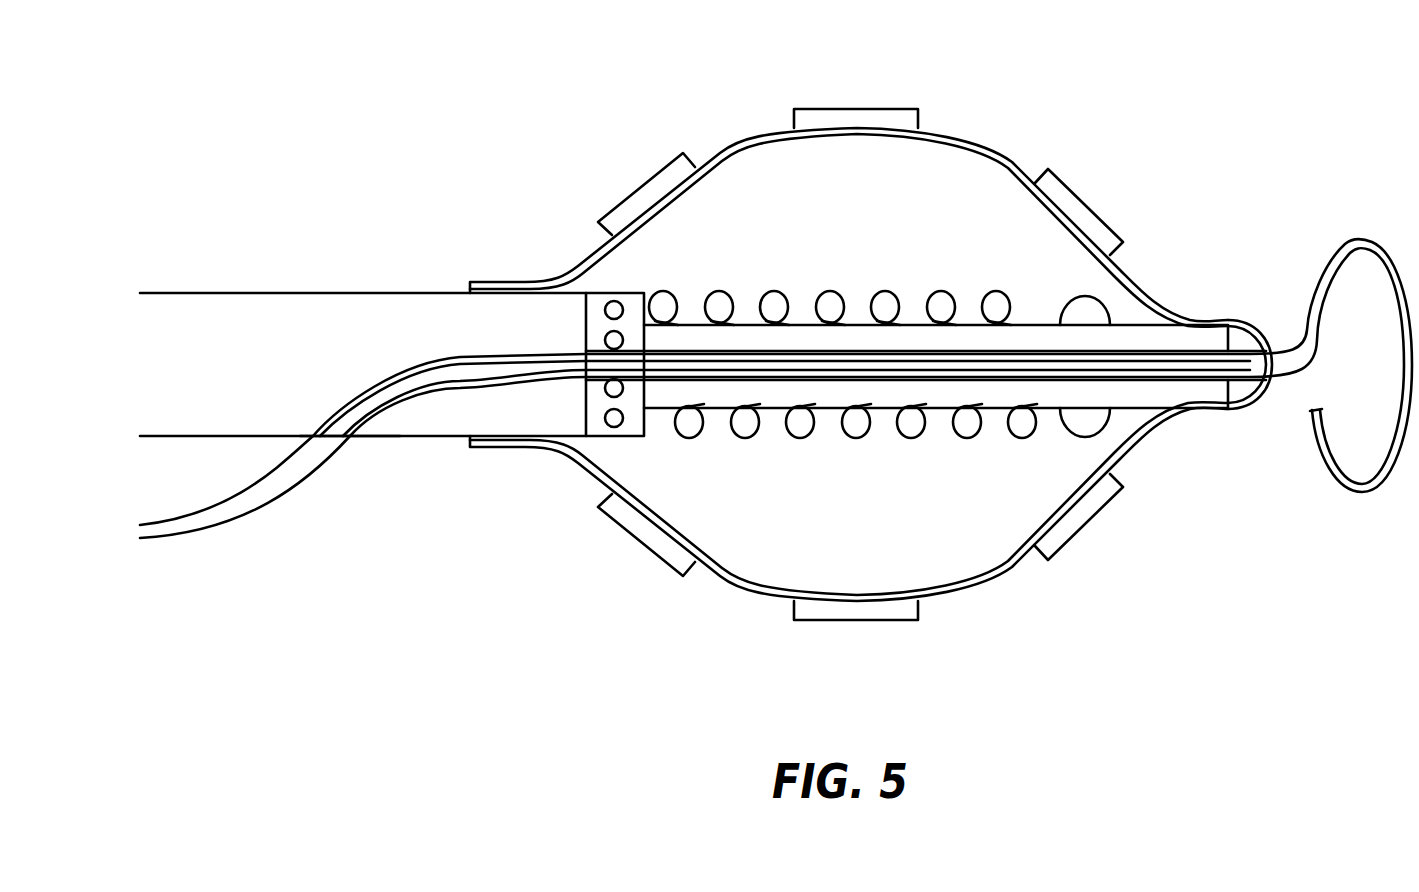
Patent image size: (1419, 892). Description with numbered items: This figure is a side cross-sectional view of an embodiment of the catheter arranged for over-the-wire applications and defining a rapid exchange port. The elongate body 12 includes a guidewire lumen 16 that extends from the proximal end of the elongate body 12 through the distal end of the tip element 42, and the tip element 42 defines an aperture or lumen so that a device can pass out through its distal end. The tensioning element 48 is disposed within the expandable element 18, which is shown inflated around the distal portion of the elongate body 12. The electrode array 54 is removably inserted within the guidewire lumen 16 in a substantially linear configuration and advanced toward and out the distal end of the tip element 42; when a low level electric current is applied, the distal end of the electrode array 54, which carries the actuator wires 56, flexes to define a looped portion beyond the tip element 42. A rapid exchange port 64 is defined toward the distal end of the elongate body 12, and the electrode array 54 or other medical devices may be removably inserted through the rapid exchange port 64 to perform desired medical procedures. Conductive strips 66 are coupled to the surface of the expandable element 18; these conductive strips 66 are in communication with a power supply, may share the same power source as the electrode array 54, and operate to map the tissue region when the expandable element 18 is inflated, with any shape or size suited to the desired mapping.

The elongate body 12 is at (196, 293).
The guidewire lumen 16 is at (432, 393).
The expandable element 18 is at (988, 150).
The tip element 42 is at (1240, 340).
The tensioning element 48 is at (772, 302).
The electrode array 54 is at (1348, 238).
The actuator wires 56 is at (1088, 420).
The rapid exchange port 64 is at (348, 437).
The conductive strips 66 is at (1082, 528).